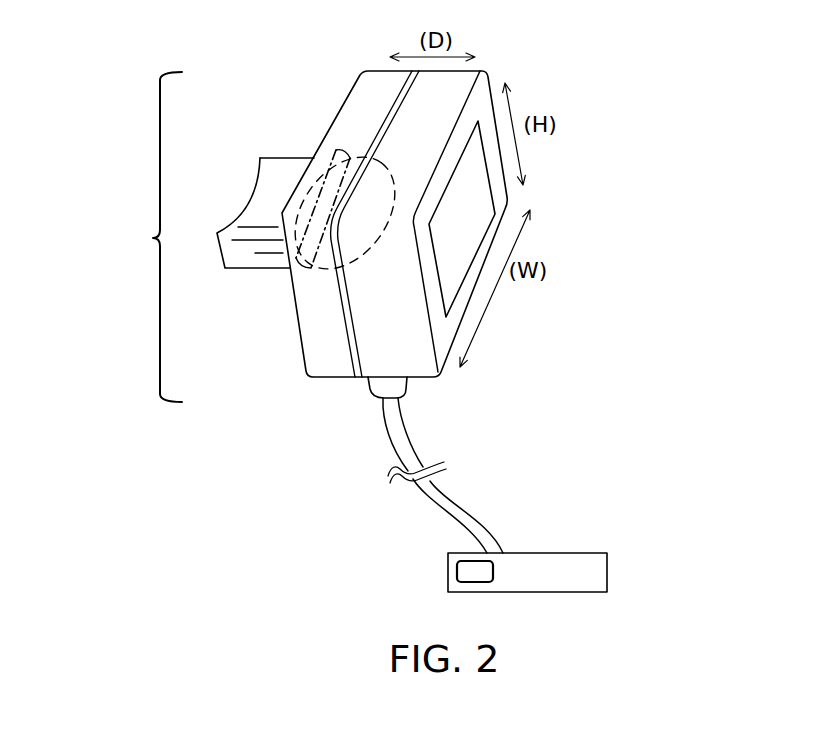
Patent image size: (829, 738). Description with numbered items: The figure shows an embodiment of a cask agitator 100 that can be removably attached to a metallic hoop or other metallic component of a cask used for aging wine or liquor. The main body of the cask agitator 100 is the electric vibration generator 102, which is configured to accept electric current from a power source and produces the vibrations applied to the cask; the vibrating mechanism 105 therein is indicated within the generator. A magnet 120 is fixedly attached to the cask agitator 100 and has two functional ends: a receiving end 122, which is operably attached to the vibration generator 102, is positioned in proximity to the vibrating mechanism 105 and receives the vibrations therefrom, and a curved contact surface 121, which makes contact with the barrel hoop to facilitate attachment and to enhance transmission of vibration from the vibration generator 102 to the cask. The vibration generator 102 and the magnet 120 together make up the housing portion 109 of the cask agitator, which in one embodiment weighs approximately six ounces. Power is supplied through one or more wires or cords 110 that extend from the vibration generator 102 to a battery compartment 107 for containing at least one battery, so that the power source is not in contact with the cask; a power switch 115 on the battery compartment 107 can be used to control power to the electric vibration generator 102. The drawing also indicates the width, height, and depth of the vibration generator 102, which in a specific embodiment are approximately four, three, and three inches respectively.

The cask agitator 100 is at (558, 165).
The electric vibration generator 102 is at (485, 100).
The vibrating mechanism 105 is at (352, 152).
The battery compartment 107 is at (533, 570).
The housing portion 109 is at (153, 238).
The wires or cords 110 is at (413, 442).
The power switch 115 is at (467, 572).
The magnet 120 is at (285, 163).
The contact surface 121 is at (248, 200).
The receiving end 122 is at (296, 263).